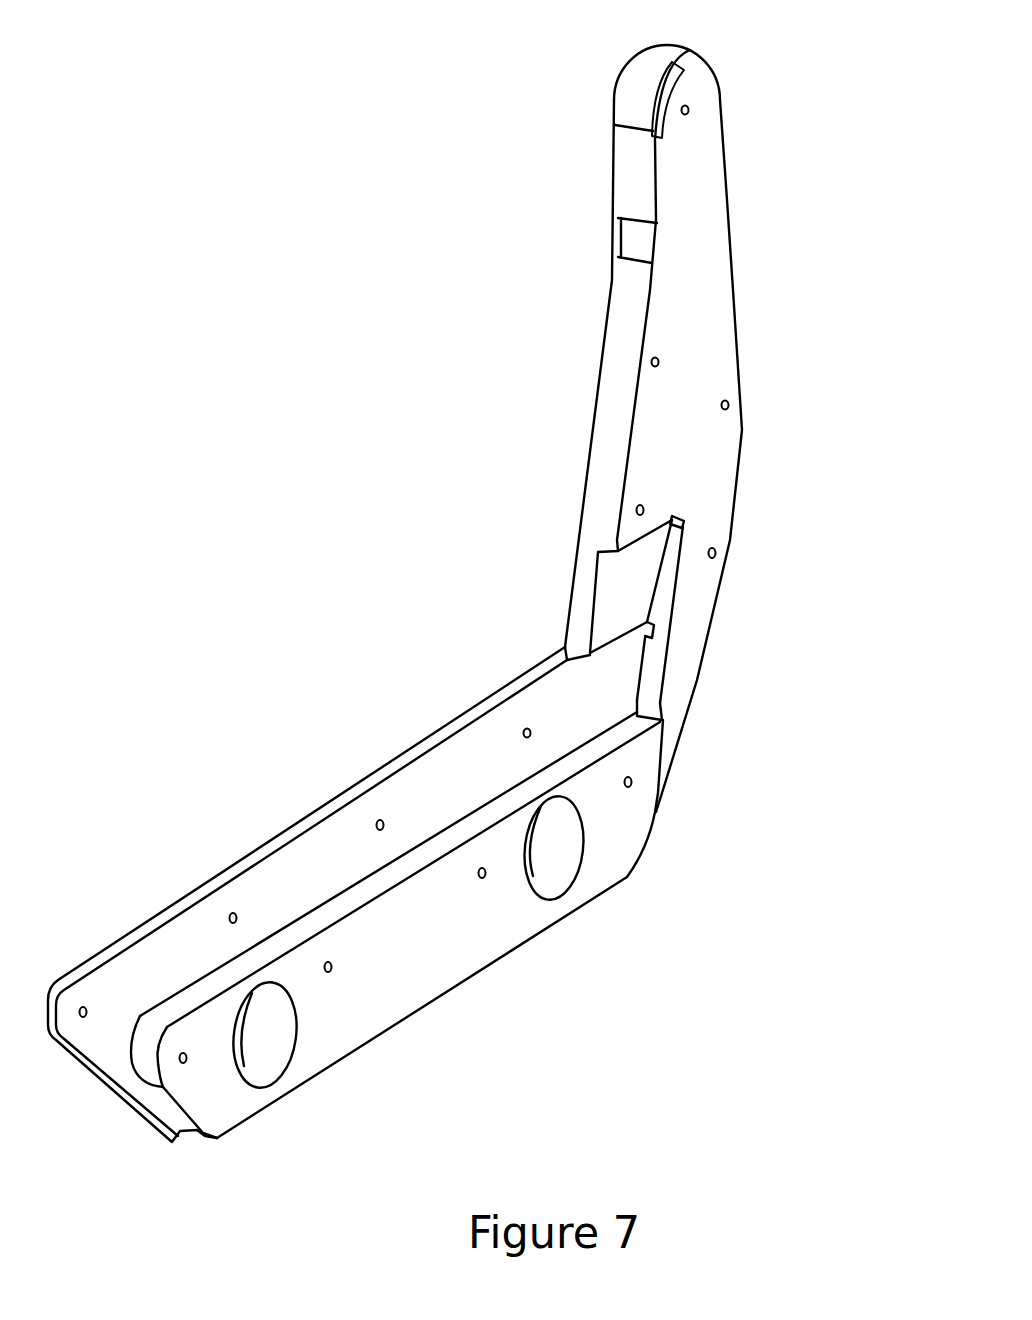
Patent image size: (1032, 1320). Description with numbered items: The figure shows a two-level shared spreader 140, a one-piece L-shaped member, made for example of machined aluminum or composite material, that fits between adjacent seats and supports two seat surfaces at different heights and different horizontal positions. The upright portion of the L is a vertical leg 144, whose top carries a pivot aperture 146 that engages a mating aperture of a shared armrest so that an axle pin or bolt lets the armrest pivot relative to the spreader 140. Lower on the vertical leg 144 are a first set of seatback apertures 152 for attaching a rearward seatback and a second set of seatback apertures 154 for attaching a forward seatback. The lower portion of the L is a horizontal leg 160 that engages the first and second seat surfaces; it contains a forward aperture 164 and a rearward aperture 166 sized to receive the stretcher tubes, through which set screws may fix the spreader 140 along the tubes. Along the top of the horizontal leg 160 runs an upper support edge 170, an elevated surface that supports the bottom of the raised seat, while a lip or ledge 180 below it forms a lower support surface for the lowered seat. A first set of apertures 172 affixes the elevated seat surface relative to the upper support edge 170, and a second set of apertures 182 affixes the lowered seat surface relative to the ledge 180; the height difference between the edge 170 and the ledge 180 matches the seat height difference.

The shared spreader 140 is at (350, 565).
The vertical leg 144 is at (725, 327).
The pivot aperture 146 is at (680, 111).
The first set of seatback apertures 152 is at (716, 551).
The second set of seatback apertures 154 is at (637, 507).
The horizontal leg 160 is at (197, 1052).
The forward aperture 164 is at (272, 1060).
The rearward aperture 166 is at (555, 878).
The upper support edge 170 is at (150, 920).
The first set of apertures 172 is at (235, 914).
The lip or ledge 180 is at (478, 823).
The second set of apertures 182 is at (331, 970).